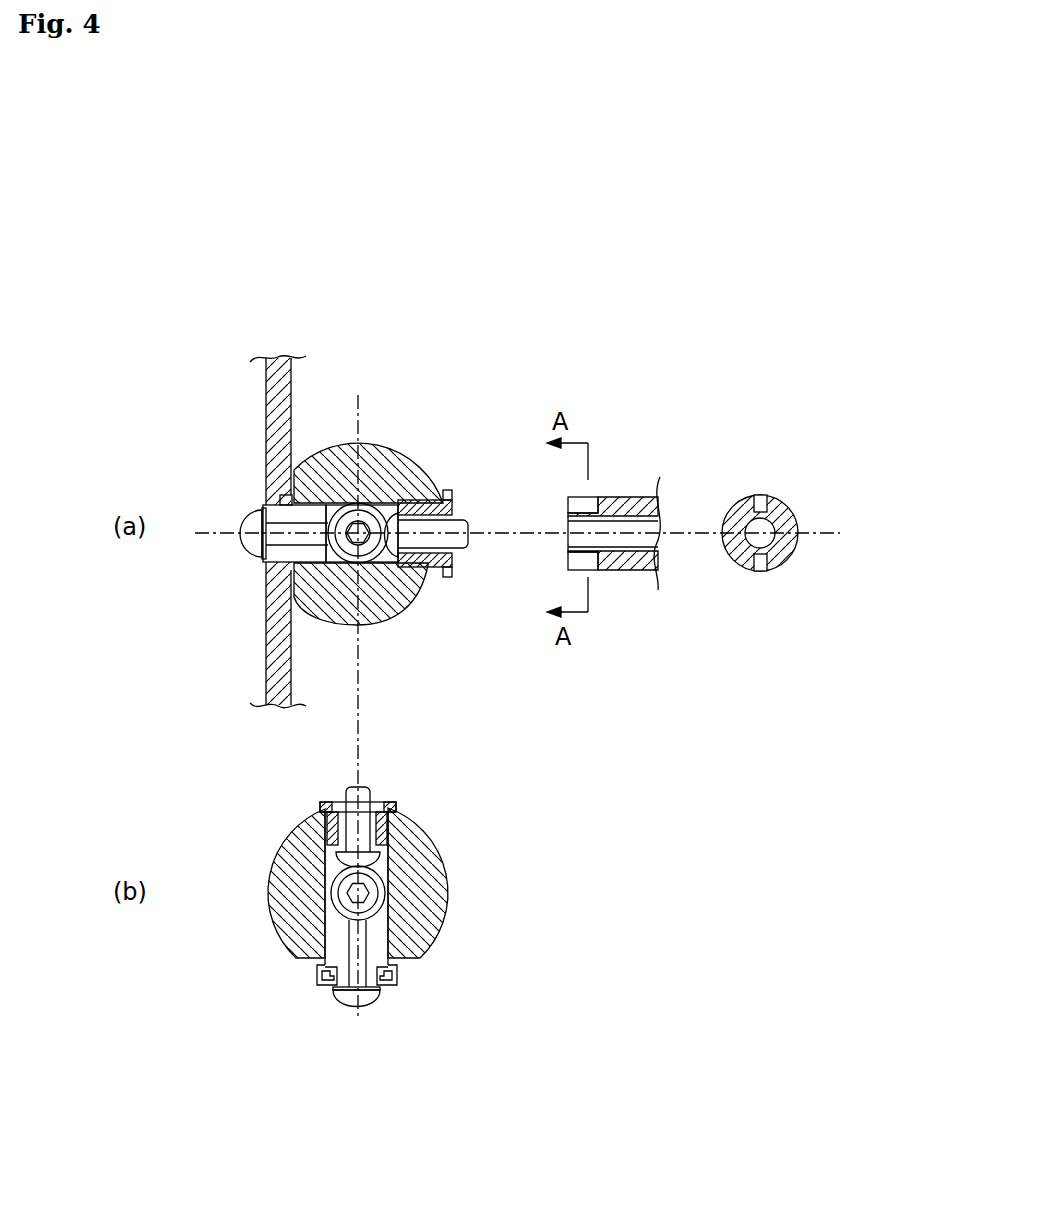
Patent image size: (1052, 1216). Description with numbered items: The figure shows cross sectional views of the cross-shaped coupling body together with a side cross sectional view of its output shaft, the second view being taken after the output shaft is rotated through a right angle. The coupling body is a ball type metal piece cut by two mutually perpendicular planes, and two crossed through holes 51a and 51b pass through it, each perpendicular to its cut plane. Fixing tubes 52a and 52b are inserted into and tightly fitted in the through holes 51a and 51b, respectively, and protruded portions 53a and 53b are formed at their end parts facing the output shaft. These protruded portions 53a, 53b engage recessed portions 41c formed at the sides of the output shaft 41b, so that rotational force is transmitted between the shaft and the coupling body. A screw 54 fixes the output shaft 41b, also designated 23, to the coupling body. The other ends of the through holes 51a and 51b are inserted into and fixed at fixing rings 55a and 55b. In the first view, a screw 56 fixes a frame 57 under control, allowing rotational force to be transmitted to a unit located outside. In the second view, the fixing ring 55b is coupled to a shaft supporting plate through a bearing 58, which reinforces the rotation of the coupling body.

The frame 57 is at (280, 430).
The through hole 51a is at (327, 503).
The screw 54 is at (389, 512).
The protruded portion 53a is at (447, 494).
The fixing tube 52a is at (420, 564).
The fixing ring 55a is at (312, 550).
The screw 56 is at (250, 543).
The recessed portion 41c is at (763, 497).
The output shaft 41b is at (797, 517).
The output shaft 23 is at (823, 517).
The through hole 51b is at (385, 867).
The fixing tube 52b is at (389, 841).
The protruded portion 53b is at (336, 802).
The fixing ring 55b is at (377, 937).
The bearing 58 is at (402, 975).